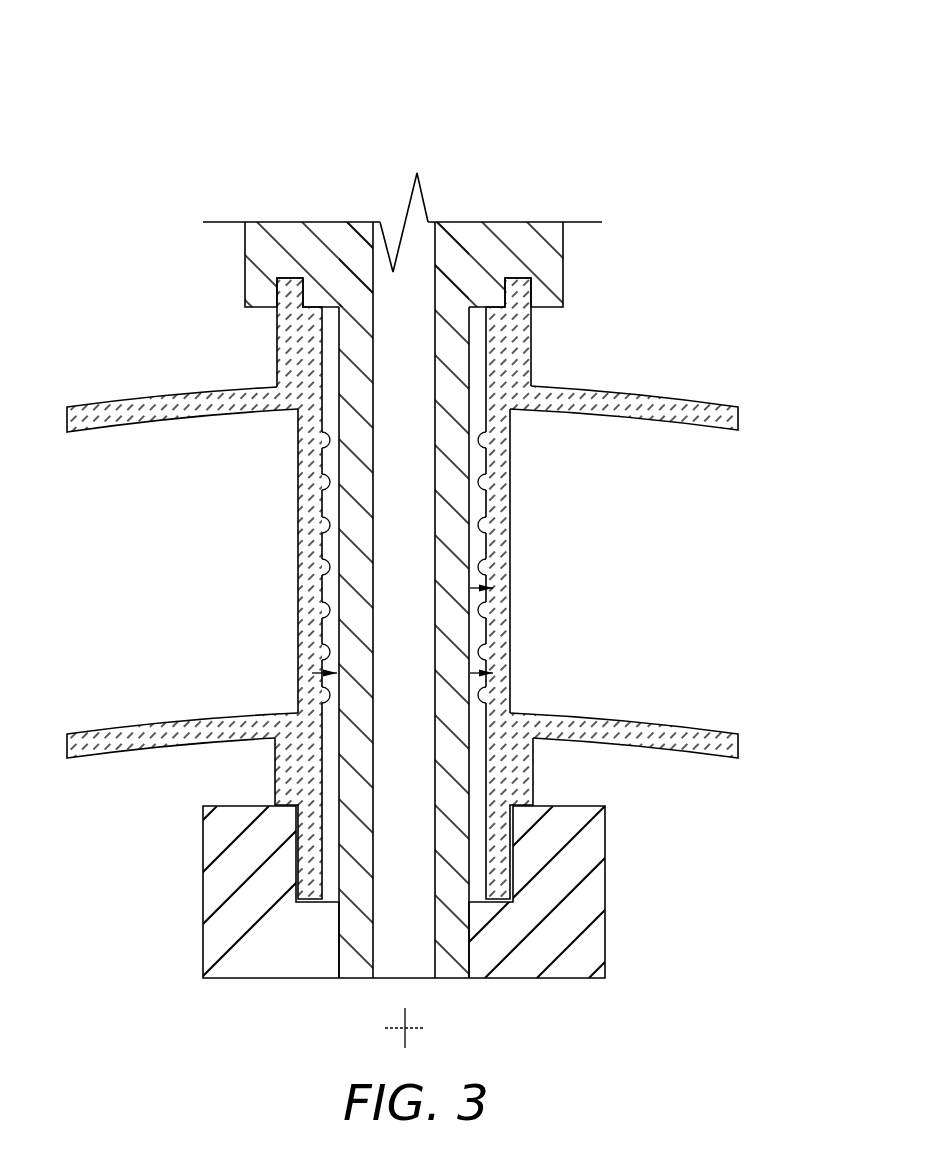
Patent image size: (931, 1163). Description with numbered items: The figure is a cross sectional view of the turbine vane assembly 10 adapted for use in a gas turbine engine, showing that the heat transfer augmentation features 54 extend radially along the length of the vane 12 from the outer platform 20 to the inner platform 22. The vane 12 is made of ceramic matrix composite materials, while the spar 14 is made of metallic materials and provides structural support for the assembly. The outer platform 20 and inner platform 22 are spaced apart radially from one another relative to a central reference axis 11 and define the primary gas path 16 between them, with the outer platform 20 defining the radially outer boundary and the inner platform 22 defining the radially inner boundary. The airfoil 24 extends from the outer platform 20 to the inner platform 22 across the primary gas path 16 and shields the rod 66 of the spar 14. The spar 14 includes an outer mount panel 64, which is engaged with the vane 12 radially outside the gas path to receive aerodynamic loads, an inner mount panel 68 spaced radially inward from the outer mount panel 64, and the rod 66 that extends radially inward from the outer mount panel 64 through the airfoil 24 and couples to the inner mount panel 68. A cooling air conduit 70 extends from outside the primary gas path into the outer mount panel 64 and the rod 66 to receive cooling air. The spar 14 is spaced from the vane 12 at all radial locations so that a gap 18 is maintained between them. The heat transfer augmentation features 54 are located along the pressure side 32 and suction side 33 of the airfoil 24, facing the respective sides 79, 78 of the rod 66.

The turbine vane assembly 10 is at (136, 126).
The central reference axis 11 is at (402, 1028).
The vane 12 is at (786, 388).
The spar 14 is at (621, 219).
The primary gas path 16 is at (103, 598).
The gap 18 is at (477, 347).
The outer platform 20 is at (697, 397).
The inner platform 22 is at (684, 748).
The airfoil 24 is at (578, 622).
The pressure side 32 is at (512, 613).
The suction side 33 is at (297, 566).
The heat transfer augmentation features 54 is at (330, 436).
The outer mount panel 64 is at (568, 272).
The rod 66 is at (493, 588).
The inner mount panel 68 is at (607, 887).
The cooling air conduit 70 is at (418, 366).
The side of the rod 78 is at (312, 673).
The side of the rod 79 is at (493, 673).